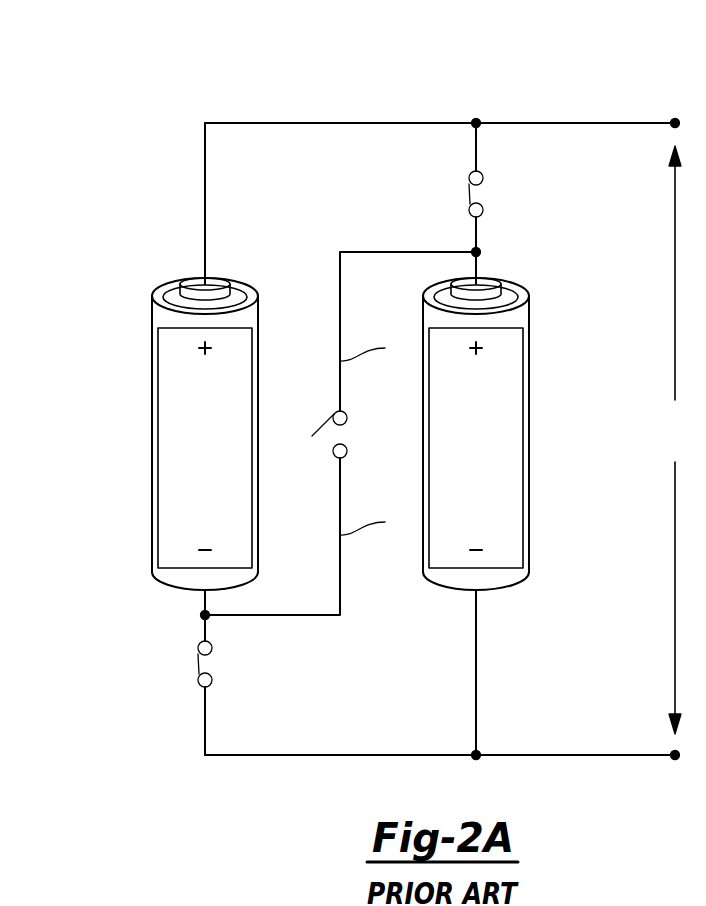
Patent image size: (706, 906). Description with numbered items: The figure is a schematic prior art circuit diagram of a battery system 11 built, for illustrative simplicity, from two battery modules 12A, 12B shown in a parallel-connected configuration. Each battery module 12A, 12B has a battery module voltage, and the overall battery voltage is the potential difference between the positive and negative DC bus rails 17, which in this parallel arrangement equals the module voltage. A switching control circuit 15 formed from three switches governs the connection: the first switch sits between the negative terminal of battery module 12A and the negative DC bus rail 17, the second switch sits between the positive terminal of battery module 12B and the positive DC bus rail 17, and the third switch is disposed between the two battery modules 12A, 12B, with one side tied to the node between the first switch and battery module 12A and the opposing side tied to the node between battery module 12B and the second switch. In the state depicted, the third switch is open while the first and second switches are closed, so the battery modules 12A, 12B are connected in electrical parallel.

The battery system 11 is at (418, 82).
The switching control circuit 15 is at (317, 211).
The DC bus rails 17 is at (620, 123).
The battery module 12A is at (152, 436).
The battery module 12B is at (528, 436).